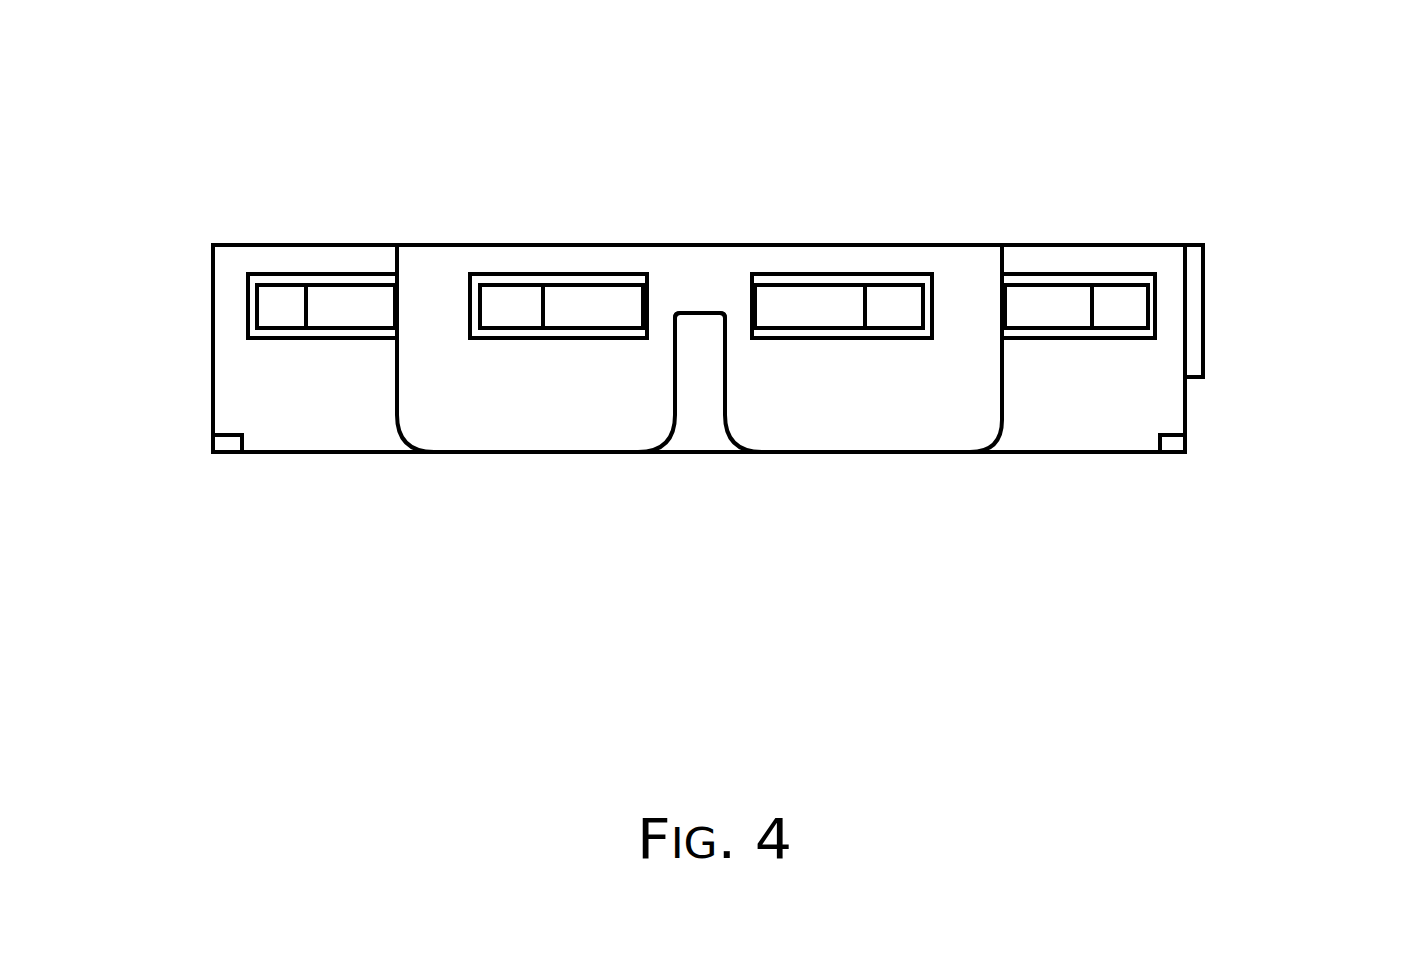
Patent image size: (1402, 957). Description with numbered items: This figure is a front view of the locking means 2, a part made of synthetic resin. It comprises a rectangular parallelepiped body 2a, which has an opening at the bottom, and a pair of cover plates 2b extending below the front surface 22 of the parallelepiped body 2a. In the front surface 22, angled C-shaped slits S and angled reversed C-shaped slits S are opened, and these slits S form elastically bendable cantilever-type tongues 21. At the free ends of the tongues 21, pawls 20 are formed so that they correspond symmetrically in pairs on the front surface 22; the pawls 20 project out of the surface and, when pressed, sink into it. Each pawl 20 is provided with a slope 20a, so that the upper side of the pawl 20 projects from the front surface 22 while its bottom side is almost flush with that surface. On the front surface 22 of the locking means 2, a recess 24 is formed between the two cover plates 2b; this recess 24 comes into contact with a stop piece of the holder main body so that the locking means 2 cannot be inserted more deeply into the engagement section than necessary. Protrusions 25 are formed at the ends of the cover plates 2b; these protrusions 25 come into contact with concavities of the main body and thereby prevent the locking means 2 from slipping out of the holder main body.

The locking means 2 is at (1318, 277).
The rectangular parallelepiped body 2a is at (1223, 243).
The cover plates 2b is at (603, 433).
The pawls 20 is at (297, 258).
The slope 20a is at (272, 302).
The tongues 21 is at (372, 302).
The front surface 22 is at (228, 352).
The recess 24 is at (700, 313).
The protrusions 25 is at (225, 443).
The slits S is at (327, 280).